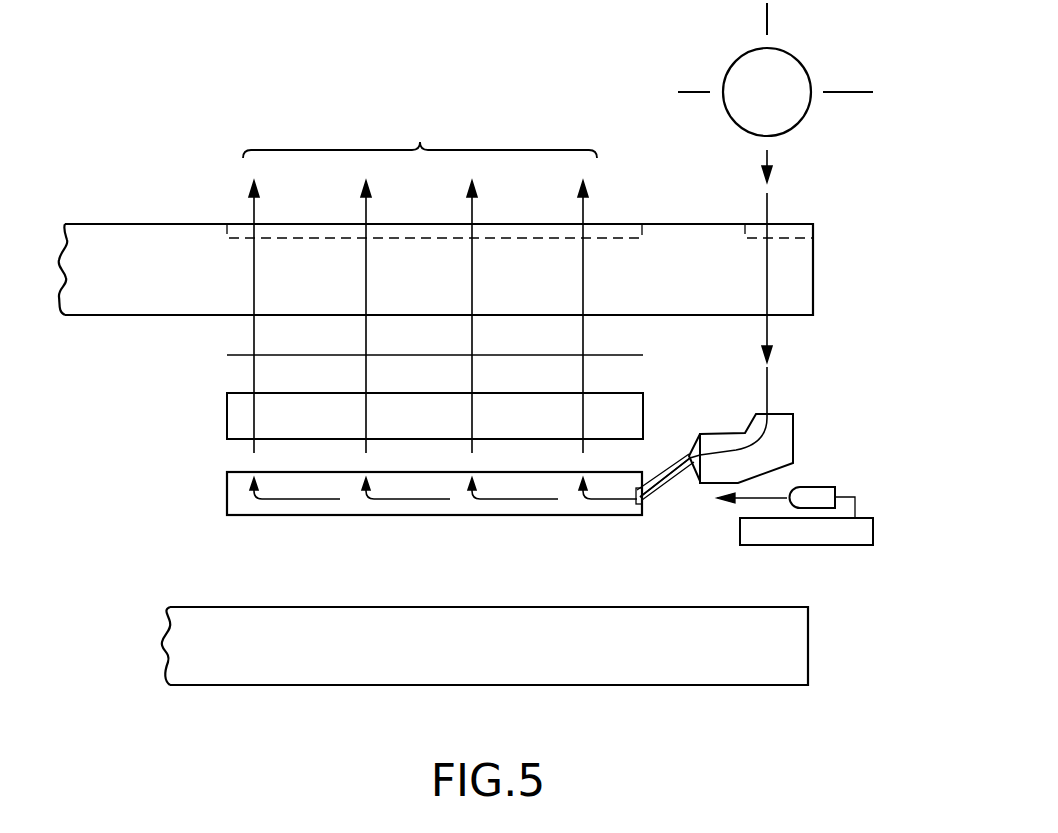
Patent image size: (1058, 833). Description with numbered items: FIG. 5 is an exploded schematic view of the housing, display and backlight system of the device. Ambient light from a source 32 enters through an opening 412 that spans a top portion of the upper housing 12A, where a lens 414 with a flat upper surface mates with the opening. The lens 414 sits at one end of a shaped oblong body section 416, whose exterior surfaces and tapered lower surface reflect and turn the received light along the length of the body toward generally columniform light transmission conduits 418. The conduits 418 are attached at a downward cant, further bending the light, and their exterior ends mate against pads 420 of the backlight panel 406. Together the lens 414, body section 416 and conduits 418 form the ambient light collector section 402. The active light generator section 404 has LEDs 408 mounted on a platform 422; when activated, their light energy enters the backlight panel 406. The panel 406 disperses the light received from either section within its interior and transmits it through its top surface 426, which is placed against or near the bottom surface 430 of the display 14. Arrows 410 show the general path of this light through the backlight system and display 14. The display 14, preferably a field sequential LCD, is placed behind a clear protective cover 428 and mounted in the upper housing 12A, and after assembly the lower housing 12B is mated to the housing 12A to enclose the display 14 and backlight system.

The upper housing 12A is at (110, 308).
The housing 12B is at (720, 670).
The display 14 is at (225, 418).
The sun / ambient light source 32 is at (785, 73).
The ambient light collector section 402 is at (657, 493).
The active light generator section 404 is at (852, 535).
The backlight panel 406 is at (335, 511).
The light sources 408 is at (813, 485).
The arrows 410 is at (820, 407).
The opening 412 is at (803, 237).
The lens 414 is at (748, 413).
The body section 416 is at (703, 437).
The light transmission conduits 418 is at (672, 474).
The pads 420 is at (637, 500).
The platform 422 is at (772, 534).
The top surface 426 is at (237, 469).
The clear protective cover 428 is at (240, 352).
The bottom surface 430 is at (240, 222).